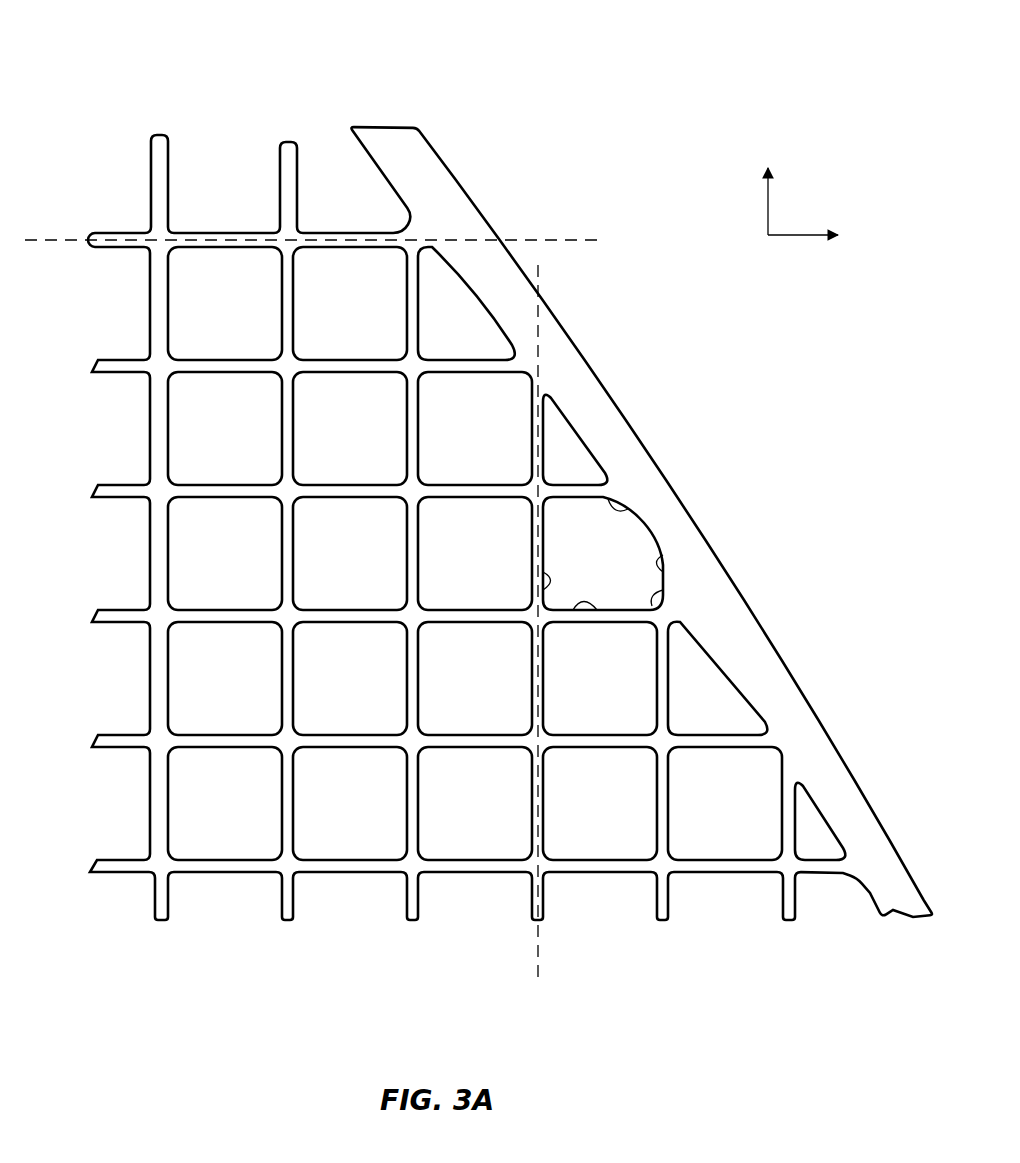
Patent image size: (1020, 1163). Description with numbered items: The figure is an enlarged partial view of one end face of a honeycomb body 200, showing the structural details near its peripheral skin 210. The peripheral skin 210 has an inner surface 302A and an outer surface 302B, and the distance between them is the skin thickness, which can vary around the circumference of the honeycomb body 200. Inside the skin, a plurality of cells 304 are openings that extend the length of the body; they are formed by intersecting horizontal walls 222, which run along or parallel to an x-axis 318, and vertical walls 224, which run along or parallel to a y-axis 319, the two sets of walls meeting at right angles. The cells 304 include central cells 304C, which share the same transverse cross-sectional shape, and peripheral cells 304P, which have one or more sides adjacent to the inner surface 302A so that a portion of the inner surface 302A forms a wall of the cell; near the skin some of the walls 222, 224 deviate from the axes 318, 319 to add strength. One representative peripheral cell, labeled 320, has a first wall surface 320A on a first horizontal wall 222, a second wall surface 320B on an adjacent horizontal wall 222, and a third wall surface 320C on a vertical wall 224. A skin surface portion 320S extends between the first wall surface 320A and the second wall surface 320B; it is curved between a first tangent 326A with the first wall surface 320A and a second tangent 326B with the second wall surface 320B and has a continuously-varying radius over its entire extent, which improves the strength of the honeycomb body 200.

The honeycomb body 200 is at (209, 48).
The peripheral skin 210 is at (448, 159).
The horizontal walls 222 is at (97, 362).
The vertical walls 224 is at (287, 141).
The inner surface 302A is at (366, 148).
The outer surface 302B is at (472, 197).
The cells 304 is at (285, 239).
The central cells 304C is at (412, 514).
The peripheral cells 304P is at (581, 514).
The x-axis 318 is at (598, 240).
The y-axis 319 is at (538, 268).
The peripheral cell 320 is at (652, 529).
The first wall surface 320A is at (560, 513).
The second wall surface 320B is at (583, 597).
The third wall surface 320C is at (548, 580).
The skin surface portion 320S is at (665, 565).
The first tangent 326A is at (632, 515).
The second tangent 326B is at (663, 586).